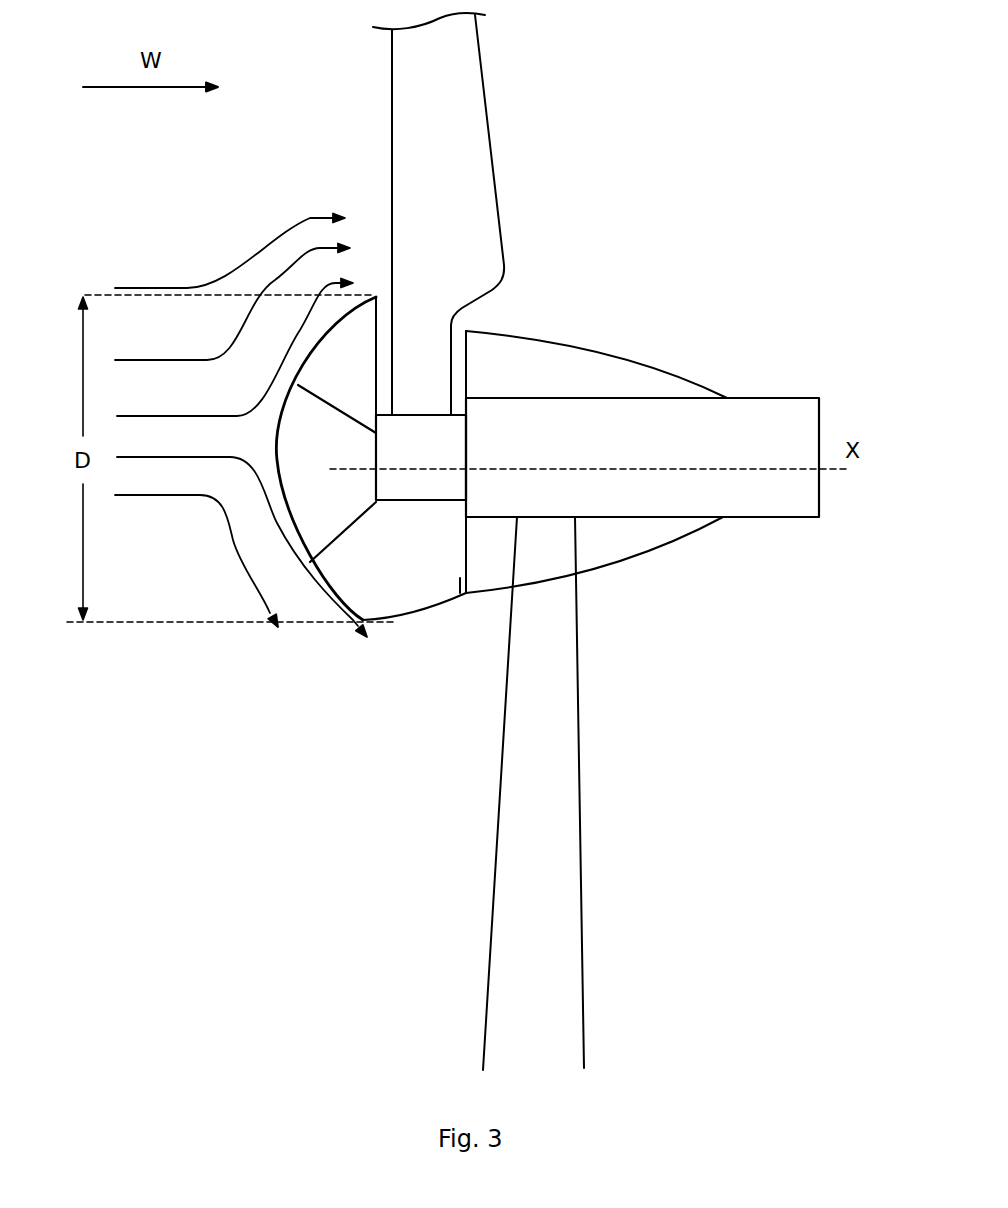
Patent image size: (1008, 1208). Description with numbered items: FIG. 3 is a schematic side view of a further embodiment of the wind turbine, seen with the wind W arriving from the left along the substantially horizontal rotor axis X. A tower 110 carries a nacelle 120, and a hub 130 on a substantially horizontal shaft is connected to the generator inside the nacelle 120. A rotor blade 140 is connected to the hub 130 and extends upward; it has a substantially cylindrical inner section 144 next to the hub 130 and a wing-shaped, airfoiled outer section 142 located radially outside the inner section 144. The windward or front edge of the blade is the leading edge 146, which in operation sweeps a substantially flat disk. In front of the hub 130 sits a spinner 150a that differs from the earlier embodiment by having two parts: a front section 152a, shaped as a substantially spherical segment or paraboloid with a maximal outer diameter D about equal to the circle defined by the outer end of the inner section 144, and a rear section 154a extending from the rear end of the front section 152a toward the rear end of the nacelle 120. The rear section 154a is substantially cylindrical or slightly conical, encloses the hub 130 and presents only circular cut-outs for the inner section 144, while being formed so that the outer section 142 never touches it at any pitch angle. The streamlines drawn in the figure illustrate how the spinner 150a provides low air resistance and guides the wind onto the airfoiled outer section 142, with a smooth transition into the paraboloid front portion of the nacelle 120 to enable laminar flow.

The tower 110 is at (568, 708).
The nacelle 120 is at (642, 457).
The hub 130 is at (382, 473).
The rotor blade 140 is at (472, 143).
The outer section 142 is at (395, 153).
The inner section 144 is at (432, 377).
The leading edge 146 is at (392, 100).
The spinner 150a is at (292, 355).
The front section 152a is at (235, 582).
The rear section 154a is at (400, 630).